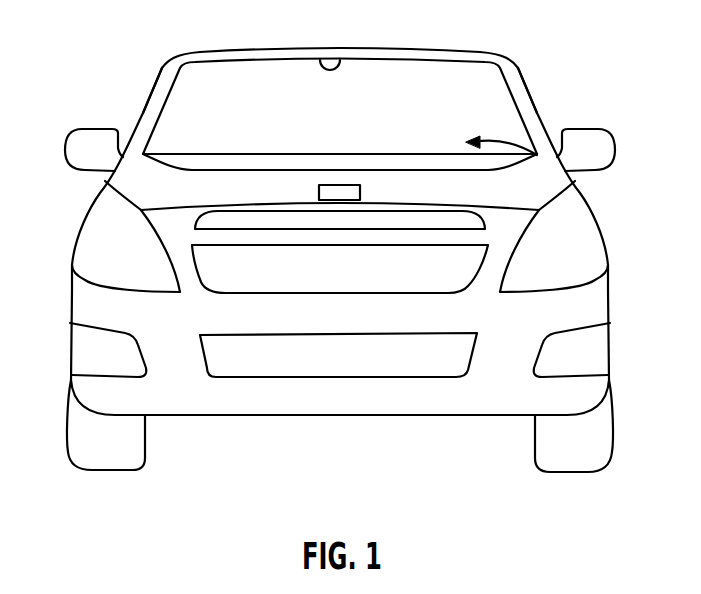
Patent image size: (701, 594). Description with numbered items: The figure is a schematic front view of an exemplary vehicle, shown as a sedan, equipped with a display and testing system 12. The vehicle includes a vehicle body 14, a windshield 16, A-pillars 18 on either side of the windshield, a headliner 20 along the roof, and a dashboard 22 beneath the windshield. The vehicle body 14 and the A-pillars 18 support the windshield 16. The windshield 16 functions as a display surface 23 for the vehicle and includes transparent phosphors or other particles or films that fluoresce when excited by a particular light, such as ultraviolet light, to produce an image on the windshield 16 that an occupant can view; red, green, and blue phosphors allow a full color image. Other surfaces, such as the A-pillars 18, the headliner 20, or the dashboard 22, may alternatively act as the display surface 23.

The display and testing system 12 is at (337, 184).
The vehicle body 14 is at (105, 183).
The windshield 16 is at (487, 92).
The A-pillars 18 is at (143, 116).
The headliner 20 is at (341, 57).
The dashboard 22 is at (416, 163).
The display surface 23 is at (578, 190).